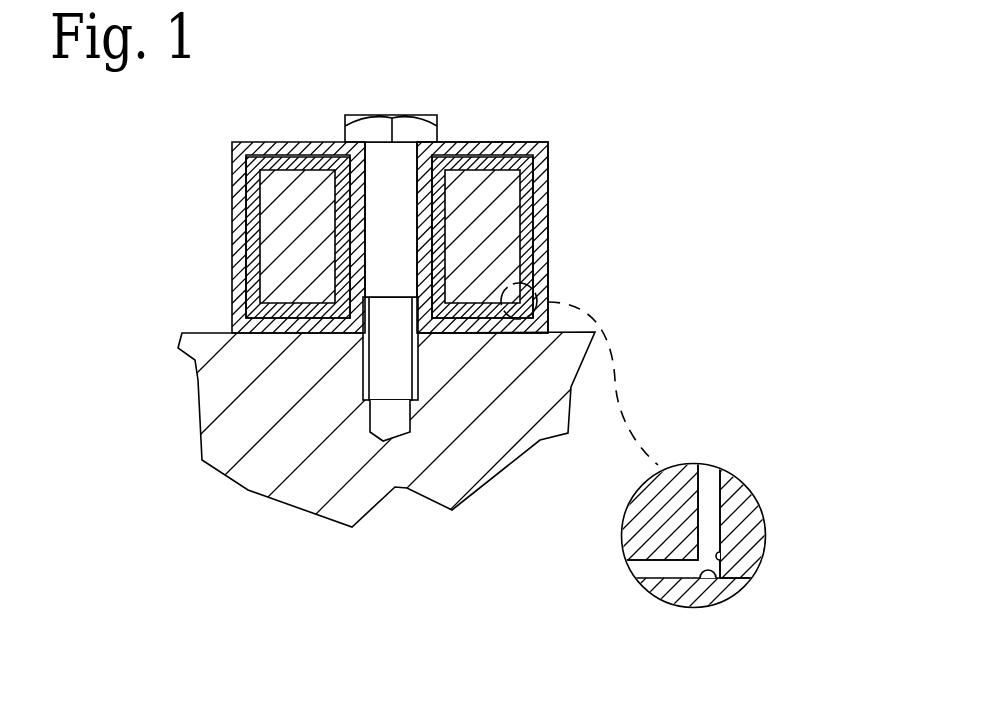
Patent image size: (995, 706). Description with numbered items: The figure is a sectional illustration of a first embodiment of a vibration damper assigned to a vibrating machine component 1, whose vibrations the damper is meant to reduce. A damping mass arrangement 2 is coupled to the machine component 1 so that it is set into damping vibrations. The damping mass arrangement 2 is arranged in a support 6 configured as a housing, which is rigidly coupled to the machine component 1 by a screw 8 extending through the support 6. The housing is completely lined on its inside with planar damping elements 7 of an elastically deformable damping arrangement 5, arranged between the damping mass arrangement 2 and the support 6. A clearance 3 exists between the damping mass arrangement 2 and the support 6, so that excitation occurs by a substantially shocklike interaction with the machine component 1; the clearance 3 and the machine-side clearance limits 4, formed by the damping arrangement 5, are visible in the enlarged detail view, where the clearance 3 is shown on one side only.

The machine component 1 is at (292, 493).
The damping mass arrangement 2 is at (479, 178).
The clearance 3 is at (712, 478).
The clearance limits 4 is at (733, 563).
The damping arrangement 5 is at (546, 350).
The support 6 is at (465, 152).
The damping element 7 is at (522, 190).
The screw 8 is at (393, 258).